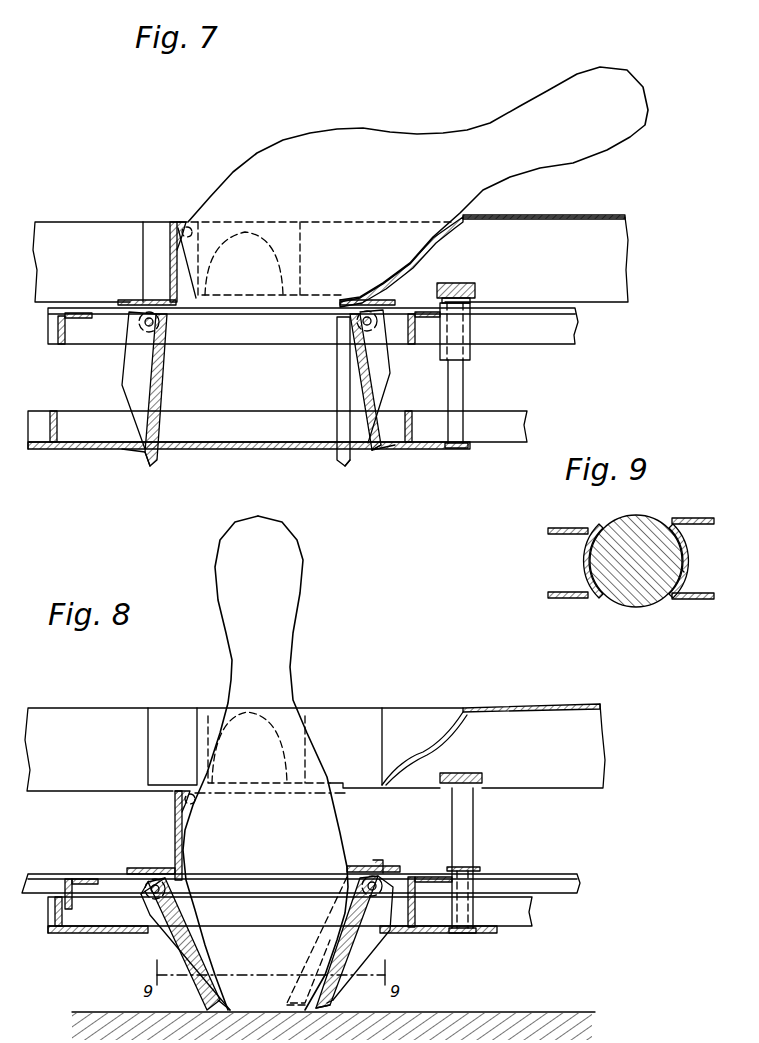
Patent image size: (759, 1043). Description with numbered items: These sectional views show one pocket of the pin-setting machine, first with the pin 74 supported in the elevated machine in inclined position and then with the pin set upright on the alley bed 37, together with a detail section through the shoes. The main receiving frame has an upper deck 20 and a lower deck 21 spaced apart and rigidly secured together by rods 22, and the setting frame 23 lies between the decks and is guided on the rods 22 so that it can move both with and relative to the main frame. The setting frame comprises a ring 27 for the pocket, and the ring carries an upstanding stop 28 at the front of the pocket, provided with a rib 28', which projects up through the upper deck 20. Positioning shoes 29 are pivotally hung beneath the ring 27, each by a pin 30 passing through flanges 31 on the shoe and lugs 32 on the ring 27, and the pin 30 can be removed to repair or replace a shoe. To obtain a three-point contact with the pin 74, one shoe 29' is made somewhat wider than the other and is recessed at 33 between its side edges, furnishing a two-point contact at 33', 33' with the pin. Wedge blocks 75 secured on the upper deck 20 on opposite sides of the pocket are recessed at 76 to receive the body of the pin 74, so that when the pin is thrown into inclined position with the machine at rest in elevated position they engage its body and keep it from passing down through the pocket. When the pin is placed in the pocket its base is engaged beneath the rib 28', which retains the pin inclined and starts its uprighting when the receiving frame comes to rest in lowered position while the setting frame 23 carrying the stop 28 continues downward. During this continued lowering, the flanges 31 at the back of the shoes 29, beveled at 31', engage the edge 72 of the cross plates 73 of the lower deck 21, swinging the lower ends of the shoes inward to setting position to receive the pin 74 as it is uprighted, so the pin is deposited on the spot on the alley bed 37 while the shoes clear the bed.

In FIG. 7, the upper deck 20 is at (612, 270).
In FIG. 8, the upper deck 20 is at (580, 760).
In FIG. 7, the lower deck 21 is at (530, 425).
In FIG. 8, the lower deck 21 is at (520, 915).
In FIG. 7, the rods 22 is at (466, 388).
In FIG. 8, the rods 22 is at (472, 838).
In FIG. 7, the setting frame 23 is at (565, 327).
In FIG. 8, the setting frame 23 is at (565, 888).
In FIG. 7, the ring 27 is at (360, 298).
In FIG. 7, the stop 28 is at (140, 262).
In FIG. 8, the stop 28 is at (155, 835).
In FIG. 7, the rib 28' is at (192, 235).
In FIG. 8, the rib 28' is at (175, 777).
In FIG. 7, the positioning shoe 29 is at (263, 390).
In FIG. 8, the positioning shoe 29 is at (263, 943).
In FIG. 9, the positioning shoe 29 is at (561, 561).
In FIG. 7, the wider positioning shoe 29' is at (321, 391).
In FIG. 8, the wider positioning shoe 29' is at (315, 940).
In FIG. 9, the wider positioning shoe 29' is at (708, 561).
In FIG. 7, the pin 30 is at (143, 324).
In FIG. 8, the pin 30 is at (382, 866).
In FIG. 7, the flanges 31 is at (253, 379).
In FIG. 8, the flanges 31 is at (263, 943).
In FIG. 9, the flanges 31 is at (553, 559).
In FIG. 7, the beveled edges 31' is at (255, 462).
In FIG. 8, the beveled edges 31' is at (283, 982).
In FIG. 7, the lugs 32 is at (120, 304).
In FIG. 8, the lugs 32 is at (158, 872).
In FIG. 7, the recess 33 is at (325, 469).
In FIG. 8, the recess 33 is at (340, 997).
In FIG. 9, the recess 33 is at (707, 571).
In FIG. 8, the two-point contact 33' is at (280, 995).
In FIG. 9, the two-point contact 33' is at (693, 560).
In FIG. 8, the alley bed 37 is at (432, 1010).
In FIG. 7, the edge 72 is at (152, 468).
In FIG. 8, the edge 72 is at (148, 933).
In FIG. 7, the cross plates 73 is at (95, 450).
In FIG. 8, the cross plates 73 is at (108, 935).
In FIG. 7, the pin 74 is at (398, 142).
In FIG. 8, the pin 74 is at (291, 663).
In FIG. 9, the pin 74 is at (630, 608).
In FIG. 7, the wedge blocks 75 is at (152, 230).
In FIG. 8, the wedge blocks 75 is at (197, 712).
In FIG. 7, the recess 76 is at (257, 230).
In FIG. 8, the recess 76 is at (258, 722).